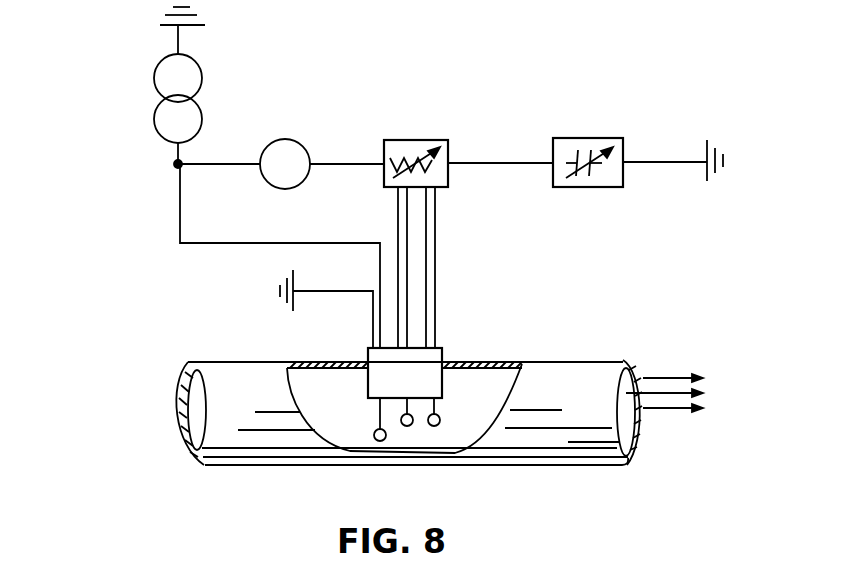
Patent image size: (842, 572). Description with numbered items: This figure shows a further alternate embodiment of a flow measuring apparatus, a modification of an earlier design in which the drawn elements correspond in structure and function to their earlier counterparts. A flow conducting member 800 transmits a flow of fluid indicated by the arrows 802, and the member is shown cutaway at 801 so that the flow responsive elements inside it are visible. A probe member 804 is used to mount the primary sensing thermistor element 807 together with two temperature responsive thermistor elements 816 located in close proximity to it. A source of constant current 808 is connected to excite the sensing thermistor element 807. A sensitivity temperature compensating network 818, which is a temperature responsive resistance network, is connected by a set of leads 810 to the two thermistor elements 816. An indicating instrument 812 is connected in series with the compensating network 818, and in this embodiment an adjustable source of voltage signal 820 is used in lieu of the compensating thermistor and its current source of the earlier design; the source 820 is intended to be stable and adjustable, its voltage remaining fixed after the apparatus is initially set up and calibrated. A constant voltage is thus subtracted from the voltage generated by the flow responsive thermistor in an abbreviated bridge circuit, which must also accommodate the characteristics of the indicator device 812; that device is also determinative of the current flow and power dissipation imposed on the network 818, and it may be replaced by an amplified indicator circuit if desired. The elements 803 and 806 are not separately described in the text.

The flow conducting member 800 is at (588, 465).
The cutaway 801 is at (492, 428).
The arrows 802 is at (678, 408).
The junction node 803 is at (176, 163).
The probe member 804 is at (442, 348).
The pipe wall 806 is at (497, 407).
The thermistor element 807 is at (379, 442).
The source of constant current 808 is at (154, 78).
The set of leads 810 is at (372, 238).
The indicating instrument 812 is at (283, 139).
The temperature responsive thermistor elements 816 is at (407, 426).
The sensitivity temperature compensating network 818 is at (425, 140).
The adjustable source of voltage signal 820 is at (612, 138).